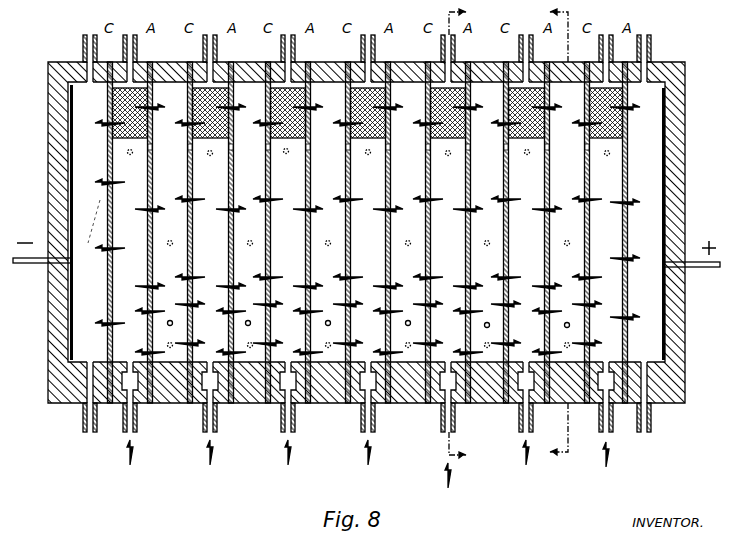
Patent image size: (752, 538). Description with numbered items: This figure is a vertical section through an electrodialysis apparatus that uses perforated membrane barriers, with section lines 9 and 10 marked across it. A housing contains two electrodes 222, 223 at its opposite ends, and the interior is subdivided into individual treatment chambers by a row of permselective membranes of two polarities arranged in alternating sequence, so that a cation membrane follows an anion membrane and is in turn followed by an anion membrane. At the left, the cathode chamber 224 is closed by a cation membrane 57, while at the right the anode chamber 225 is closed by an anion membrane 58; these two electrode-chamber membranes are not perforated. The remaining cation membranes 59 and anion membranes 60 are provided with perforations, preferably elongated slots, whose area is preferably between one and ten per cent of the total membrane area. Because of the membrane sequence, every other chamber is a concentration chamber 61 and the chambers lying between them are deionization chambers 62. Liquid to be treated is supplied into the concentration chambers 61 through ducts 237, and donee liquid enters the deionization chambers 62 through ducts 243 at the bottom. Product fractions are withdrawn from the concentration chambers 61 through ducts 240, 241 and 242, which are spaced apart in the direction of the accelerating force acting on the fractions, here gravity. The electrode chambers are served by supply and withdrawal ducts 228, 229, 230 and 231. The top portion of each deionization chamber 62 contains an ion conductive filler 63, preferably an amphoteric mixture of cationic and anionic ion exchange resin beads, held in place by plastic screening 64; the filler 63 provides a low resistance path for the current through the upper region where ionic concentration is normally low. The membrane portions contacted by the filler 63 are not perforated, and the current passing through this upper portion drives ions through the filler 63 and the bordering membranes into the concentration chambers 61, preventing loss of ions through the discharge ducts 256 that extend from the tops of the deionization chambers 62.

The electrode chamber supply duct 229 is at (83, 46).
The electrode chamber withdrawal duct 228 is at (83, 422).
The electrode chamber supply duct 231 is at (652, 47).
The electrode chamber withdrawal duct 230 is at (651, 420).
The discharge duct 256 is at (368, 58).
The donee liquid duct 243 is at (368, 425).
The section line 10- 10 is at (468, 234).
The section line 9- 9 is at (551, 232).
The cation membrane 57 is at (107, 296).
The anion membrane 58 is at (627, 303).
The cation membrane 59 is at (389, 232).
The anion membrane 60 is at (349, 232).
The concentration chamber 61 is at (368, 196).
The deionization chamber 62 is at (368, 304).
The ion conductive filler 63 is at (368, 113).
The plastic screening 64 is at (368, 124).
The electrode 222 is at (70, 298).
The electrode 223 is at (666, 342).
The cathode chamber 224 is at (75, 232).
The anode chamber 225 is at (632, 233).
The supply duct 237 is at (369, 330).
The withdrawal duct 240 is at (369, 336).
The withdrawal duct 241 is at (369, 252).
The withdrawal duct 242 is at (369, 167).